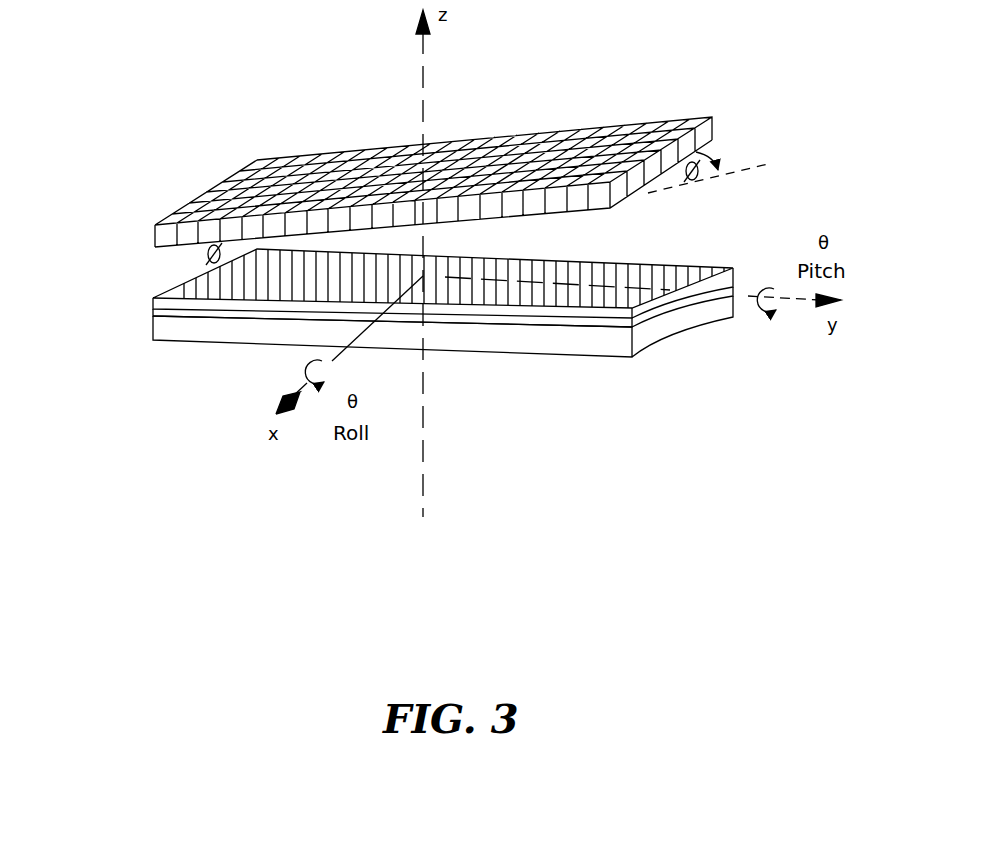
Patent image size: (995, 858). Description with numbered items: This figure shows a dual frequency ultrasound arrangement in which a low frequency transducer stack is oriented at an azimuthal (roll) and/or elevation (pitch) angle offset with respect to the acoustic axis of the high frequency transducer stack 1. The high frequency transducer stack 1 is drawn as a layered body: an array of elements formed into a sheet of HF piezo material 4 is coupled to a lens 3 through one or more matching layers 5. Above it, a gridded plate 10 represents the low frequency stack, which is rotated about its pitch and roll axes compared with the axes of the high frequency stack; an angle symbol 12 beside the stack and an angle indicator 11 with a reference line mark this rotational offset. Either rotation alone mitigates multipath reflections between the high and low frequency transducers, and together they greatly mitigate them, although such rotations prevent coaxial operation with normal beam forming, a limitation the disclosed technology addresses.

The high frequency transducer stack 1 is at (655, 282).
The lens 3 is at (602, 343).
The sheet of HF piezo material 4 is at (183, 287).
The matching layers 5 is at (153, 315).
The grid plate 10 is at (657, 118).
The yaw rotation indicator 11 is at (770, 140).
The rotation angle symbol 12 is at (197, 258).